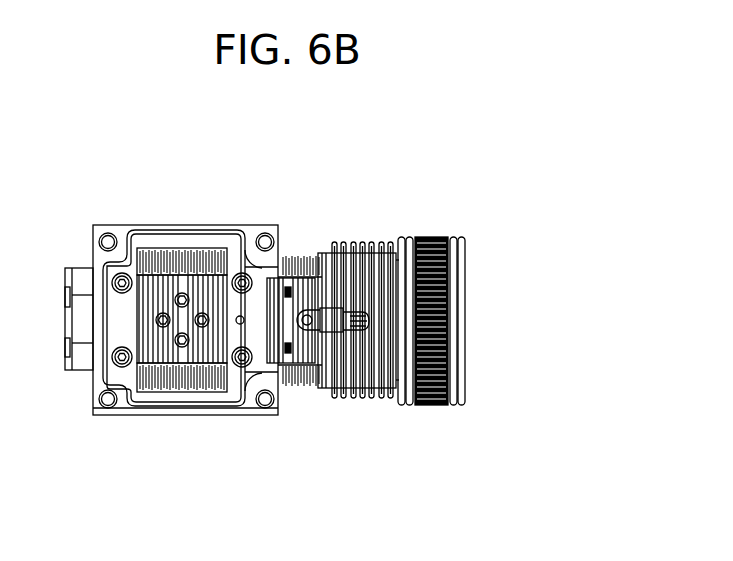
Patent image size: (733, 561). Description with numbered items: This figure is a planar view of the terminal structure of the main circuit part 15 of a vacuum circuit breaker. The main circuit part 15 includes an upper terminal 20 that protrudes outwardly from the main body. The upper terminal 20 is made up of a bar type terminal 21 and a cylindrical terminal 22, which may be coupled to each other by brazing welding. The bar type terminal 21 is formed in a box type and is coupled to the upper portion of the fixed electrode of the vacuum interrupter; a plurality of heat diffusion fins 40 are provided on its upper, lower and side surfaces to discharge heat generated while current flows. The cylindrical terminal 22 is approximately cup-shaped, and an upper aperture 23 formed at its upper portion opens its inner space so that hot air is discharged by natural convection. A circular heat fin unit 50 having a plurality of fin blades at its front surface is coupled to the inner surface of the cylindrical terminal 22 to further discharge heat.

The main circuit part 15 is at (107, 415).
The upper terminal 20 is at (460, 230).
The bar type terminal 21 is at (263, 265).
The cylindrical terminal 22 is at (360, 236).
The upper aperture 23 is at (322, 273).
The heat diffusion fins 40 is at (173, 267).
The circular heat fin unit 50 is at (327, 308).